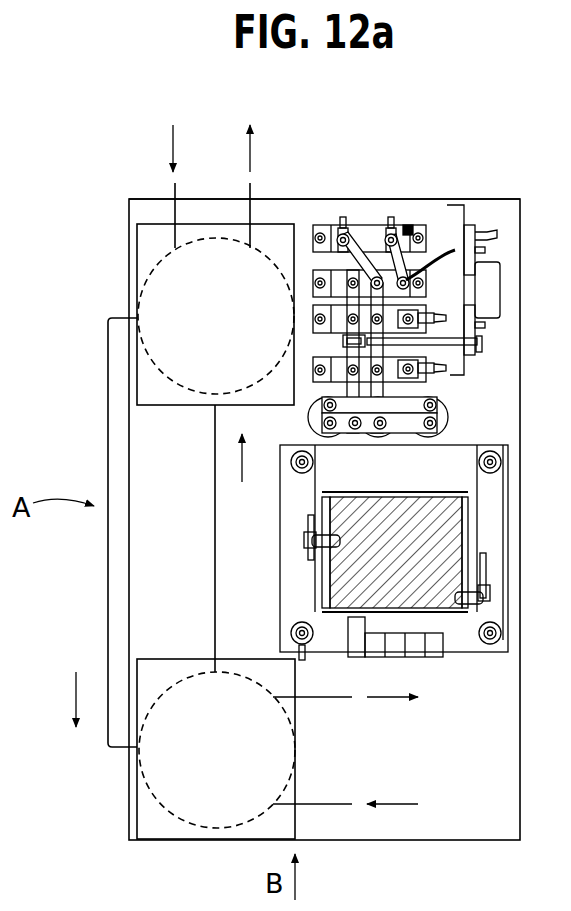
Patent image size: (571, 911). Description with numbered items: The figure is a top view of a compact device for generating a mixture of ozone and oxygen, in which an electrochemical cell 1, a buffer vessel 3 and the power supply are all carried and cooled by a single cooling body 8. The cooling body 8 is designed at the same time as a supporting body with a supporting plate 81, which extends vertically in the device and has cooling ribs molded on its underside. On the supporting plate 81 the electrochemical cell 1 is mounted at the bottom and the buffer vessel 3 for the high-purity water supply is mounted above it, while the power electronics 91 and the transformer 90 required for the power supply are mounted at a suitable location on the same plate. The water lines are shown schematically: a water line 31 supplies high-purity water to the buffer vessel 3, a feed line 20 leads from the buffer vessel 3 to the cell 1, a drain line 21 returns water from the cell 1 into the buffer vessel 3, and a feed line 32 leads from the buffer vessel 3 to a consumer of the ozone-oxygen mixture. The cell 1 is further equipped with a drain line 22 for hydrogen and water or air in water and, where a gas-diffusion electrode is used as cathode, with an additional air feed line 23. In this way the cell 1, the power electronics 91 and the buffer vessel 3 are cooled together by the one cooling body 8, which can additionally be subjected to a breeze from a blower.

The electrochemical cell 1 is at (198, 790).
The buffer vessel 3 is at (157, 298).
The cooling body 8 is at (467, 197).
The feed line 20 is at (108, 603).
The drain line 21 is at (215, 577).
The drain line 22 is at (320, 700).
The air feed line 23 is at (322, 803).
The water line 31 is at (175, 188).
The feed line 32 is at (250, 188).
The supporting plate 81 is at (493, 765).
The transformer 90 is at (493, 487).
The power electronics 91 is at (452, 370).